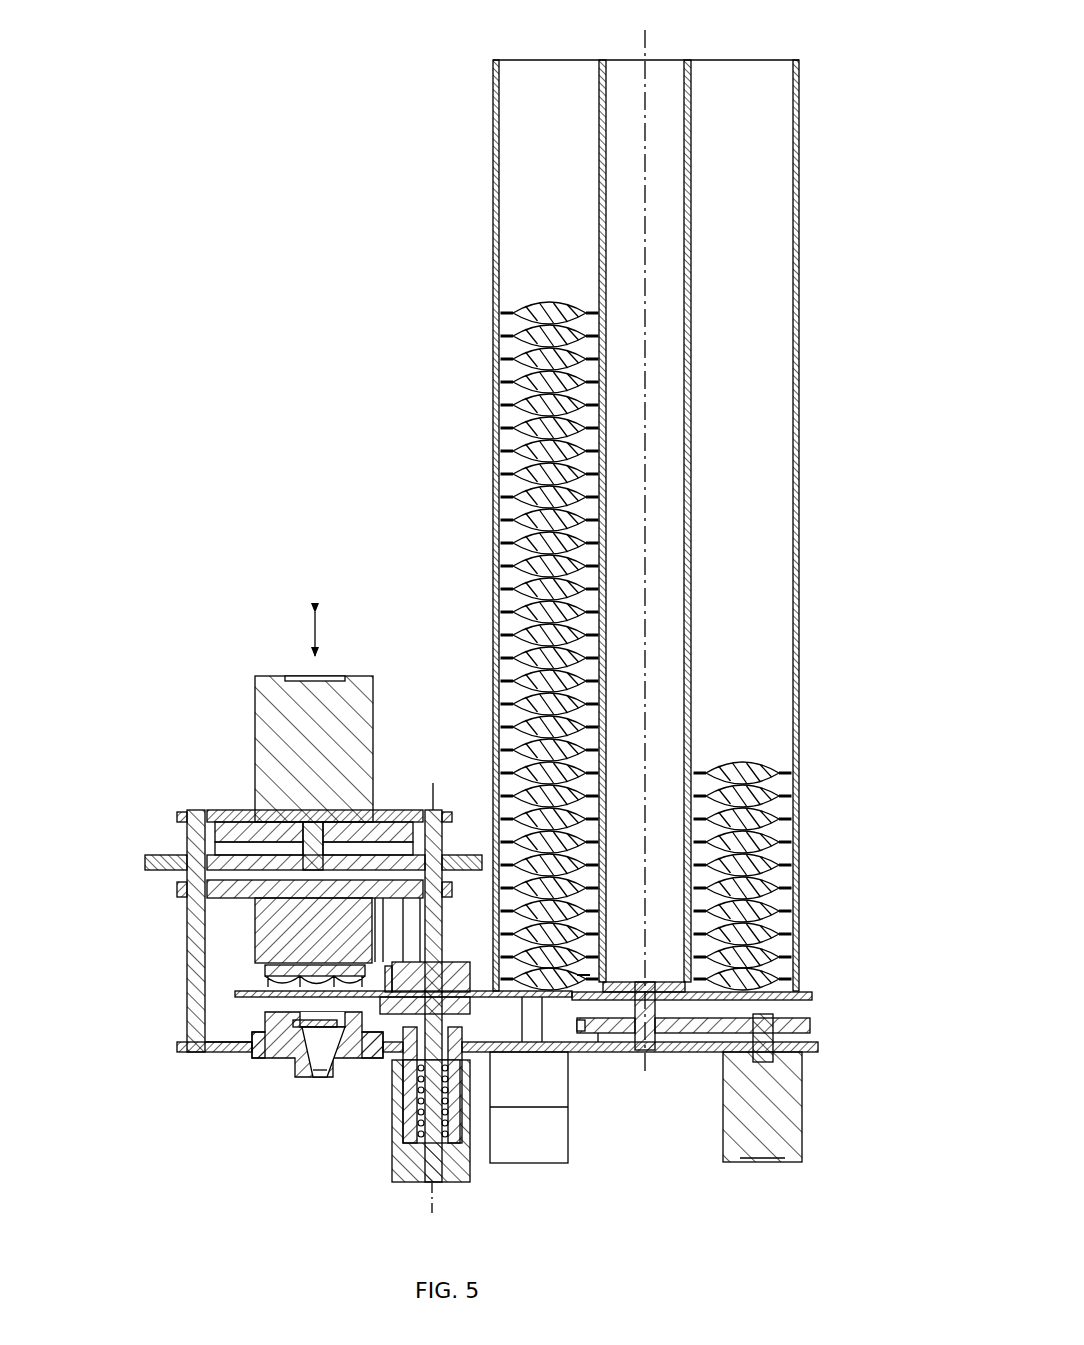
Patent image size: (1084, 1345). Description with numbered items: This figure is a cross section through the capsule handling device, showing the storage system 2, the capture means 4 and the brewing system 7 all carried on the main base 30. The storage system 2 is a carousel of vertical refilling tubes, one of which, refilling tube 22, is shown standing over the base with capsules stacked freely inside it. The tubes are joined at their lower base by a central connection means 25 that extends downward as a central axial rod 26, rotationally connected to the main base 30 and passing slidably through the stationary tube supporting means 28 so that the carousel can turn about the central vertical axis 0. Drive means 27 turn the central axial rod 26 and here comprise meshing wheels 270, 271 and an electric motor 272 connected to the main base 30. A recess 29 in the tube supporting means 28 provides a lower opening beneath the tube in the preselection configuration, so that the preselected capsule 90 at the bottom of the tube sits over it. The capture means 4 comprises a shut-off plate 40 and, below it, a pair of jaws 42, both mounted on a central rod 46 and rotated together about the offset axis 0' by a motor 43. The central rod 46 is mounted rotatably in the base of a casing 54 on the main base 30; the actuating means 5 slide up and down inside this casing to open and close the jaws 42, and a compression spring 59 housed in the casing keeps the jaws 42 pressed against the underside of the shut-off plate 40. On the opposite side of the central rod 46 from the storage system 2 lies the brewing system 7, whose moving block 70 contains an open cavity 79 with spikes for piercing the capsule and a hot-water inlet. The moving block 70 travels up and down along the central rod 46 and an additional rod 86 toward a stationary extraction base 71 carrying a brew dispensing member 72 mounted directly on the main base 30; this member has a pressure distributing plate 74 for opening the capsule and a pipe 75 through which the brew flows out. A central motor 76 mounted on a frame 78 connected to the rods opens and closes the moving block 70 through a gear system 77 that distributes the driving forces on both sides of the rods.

The central vertical axis 0 is at (674, 542).
The central axis of rotation 0' is at (455, 1210).
The storage system 2 is at (641, 526).
The refilling tube 22 is at (493, 192).
The capture means 4 is at (383, 1062).
The actuating means 5 is at (431, 993).
The brewing system 7 is at (319, 923).
The central connection means 25 is at (644, 1084).
The central axial rod 26 is at (655, 1046).
The drive means 27 is at (538, 1048).
The meshing wheel 270 is at (600, 1034).
The meshing wheel 271 is at (810, 1026).
The electric motor 272 is at (800, 1116).
The tube supporting means 28 is at (812, 990).
The recess 29 is at (556, 1000).
The main base 30 is at (818, 1060).
The shut-off plate 40 is at (233, 993).
The jaws 42 is at (486, 1013).
The motor 43 is at (540, 1164).
The central rod 46 is at (447, 841).
The casing 54 is at (406, 1184).
The compression spring 59 is at (447, 1125).
The moving block 70 is at (246, 916).
The stationary extraction base 71 is at (284, 1083).
The brew dispensing member 72 is at (345, 1064).
The pressure distributing plate 74 is at (311, 1080).
The pipe 75 is at (314, 1080).
The central motor 76 is at (370, 716).
The gear system 77 is at (135, 861).
The frame 78 is at (163, 807).
The open cavity 79 is at (262, 956).
The additional rod 86 is at (187, 1022).
The capsule 90 is at (579, 975).